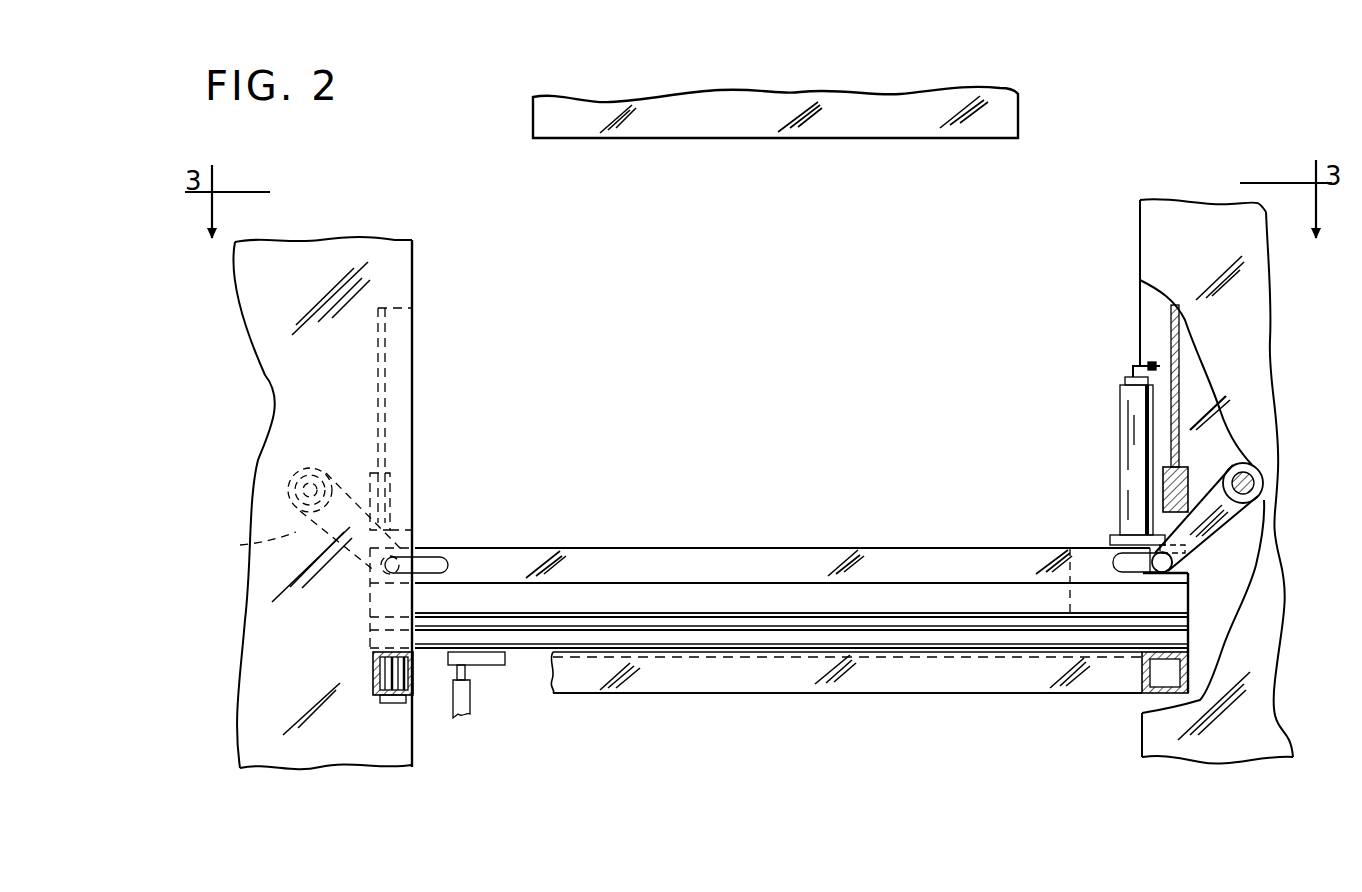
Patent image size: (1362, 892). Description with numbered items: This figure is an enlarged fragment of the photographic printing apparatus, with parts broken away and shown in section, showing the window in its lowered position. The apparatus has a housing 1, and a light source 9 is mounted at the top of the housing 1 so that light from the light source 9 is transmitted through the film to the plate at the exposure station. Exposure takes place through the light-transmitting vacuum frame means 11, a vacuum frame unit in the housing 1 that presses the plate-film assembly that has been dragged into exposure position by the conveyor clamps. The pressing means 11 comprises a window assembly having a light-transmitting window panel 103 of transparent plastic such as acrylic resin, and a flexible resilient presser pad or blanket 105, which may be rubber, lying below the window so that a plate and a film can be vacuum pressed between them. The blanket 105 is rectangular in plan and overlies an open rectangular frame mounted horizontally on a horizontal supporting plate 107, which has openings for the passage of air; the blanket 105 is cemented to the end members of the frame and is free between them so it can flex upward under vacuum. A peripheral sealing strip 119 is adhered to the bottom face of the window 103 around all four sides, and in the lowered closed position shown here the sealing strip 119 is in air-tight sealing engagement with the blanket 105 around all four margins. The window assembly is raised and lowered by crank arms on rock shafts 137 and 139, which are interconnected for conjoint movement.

The housing 1 is at (245, 322).
The light source 9 is at (795, 138).
The light-transmitting vacuum frame means 11 is at (690, 546).
The light-transmitting window panel 103 is at (803, 618).
The presser pad or blanket 105 is at (902, 632).
The horizontal supporting plate 107 is at (985, 650).
The peripheral sealing strip 119 is at (1000, 594).
The rock shaft 137 is at (290, 470).
The rock shaft 139 is at (1243, 483).